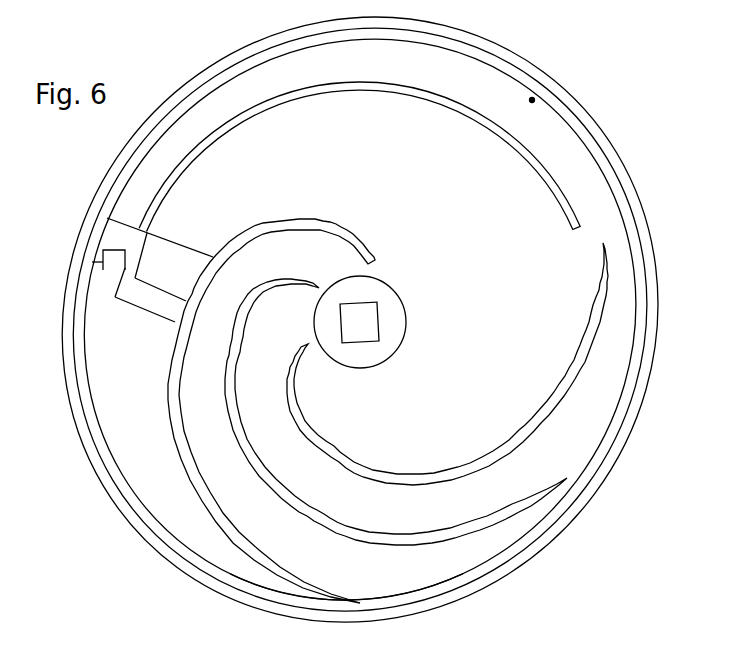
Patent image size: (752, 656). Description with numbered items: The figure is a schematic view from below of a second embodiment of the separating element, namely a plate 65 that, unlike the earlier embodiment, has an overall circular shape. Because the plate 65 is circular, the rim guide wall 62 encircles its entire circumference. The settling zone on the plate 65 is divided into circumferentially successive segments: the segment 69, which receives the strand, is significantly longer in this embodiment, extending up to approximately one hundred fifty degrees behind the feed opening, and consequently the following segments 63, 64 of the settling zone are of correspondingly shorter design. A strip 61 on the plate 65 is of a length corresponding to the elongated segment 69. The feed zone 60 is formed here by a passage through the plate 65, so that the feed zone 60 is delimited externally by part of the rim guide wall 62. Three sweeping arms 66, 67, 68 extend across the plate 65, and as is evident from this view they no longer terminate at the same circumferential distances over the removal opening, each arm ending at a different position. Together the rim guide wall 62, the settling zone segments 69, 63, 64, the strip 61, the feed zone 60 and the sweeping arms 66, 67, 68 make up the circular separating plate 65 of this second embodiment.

The feed zone 60 is at (142, 425).
The strip 61 is at (535, 97).
The rim guide wall 62 is at (640, 268).
The segment of the settling zone 63 is at (613, 363).
The segment of the settling zone 64 is at (470, 558).
The plate 65 is at (628, 147).
The sweeping arm 66 is at (560, 402).
The sweeping arm 67 is at (508, 518).
The sweeping arm 68 is at (207, 493).
The segment of the settling zone 69 is at (558, 153).